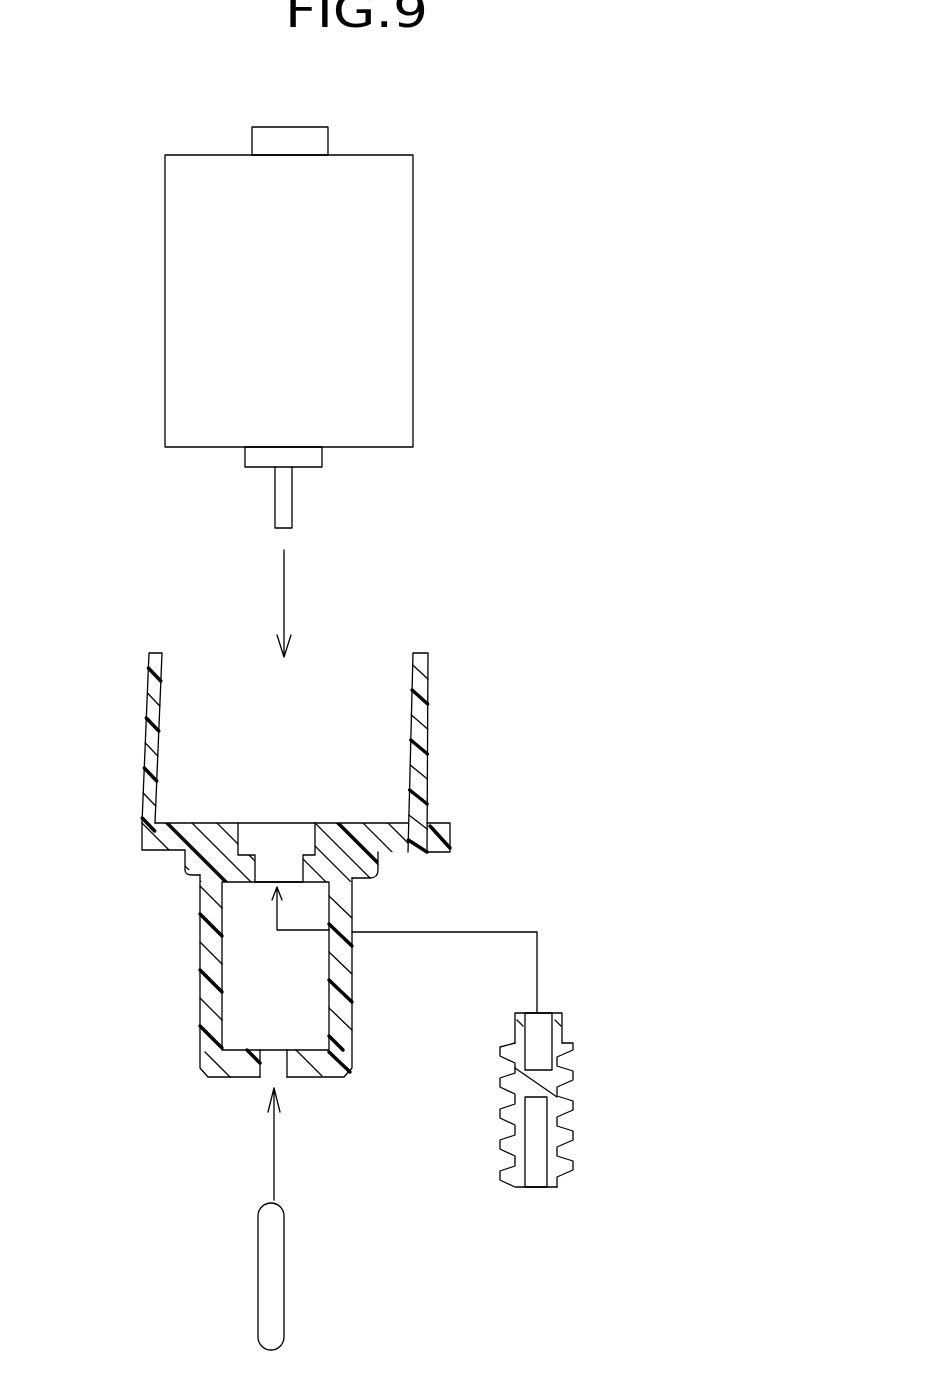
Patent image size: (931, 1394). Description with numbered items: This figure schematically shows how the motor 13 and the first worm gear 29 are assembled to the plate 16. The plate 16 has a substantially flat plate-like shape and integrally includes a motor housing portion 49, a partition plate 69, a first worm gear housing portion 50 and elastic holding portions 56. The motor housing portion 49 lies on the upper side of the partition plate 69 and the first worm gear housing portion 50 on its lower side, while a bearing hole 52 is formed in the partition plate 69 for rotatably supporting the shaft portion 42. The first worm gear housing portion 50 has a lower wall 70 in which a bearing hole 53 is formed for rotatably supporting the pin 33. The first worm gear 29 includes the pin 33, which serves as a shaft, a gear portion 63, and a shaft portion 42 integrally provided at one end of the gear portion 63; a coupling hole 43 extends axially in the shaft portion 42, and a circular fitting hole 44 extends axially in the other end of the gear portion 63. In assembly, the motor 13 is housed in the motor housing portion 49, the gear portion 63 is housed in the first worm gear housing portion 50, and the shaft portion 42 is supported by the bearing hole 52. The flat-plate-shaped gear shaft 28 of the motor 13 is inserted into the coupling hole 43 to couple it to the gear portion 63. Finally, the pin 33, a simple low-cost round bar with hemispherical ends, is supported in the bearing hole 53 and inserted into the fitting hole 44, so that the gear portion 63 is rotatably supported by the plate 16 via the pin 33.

The motor 13 is at (413, 273).
The gear shaft 28 is at (292, 507).
The motor housing portion 49 is at (427, 690).
The plate 16 is at (140, 840).
The elastic holding portions 56 is at (452, 832).
The bearing hole 52 is at (303, 875).
The first worm gear housing portion 50 is at (200, 978).
The partition plate 69 is at (247, 884).
The bearing hole 53 is at (268, 1080).
The lower wall 70 is at (300, 1080).
The pin 33 is at (258, 1283).
The shaft portion 42 is at (512, 1032).
The coupling hole 43 is at (548, 1030).
The gear portion 63 is at (573, 1118).
The first worm gear 29 is at (285, 1253).
The fitting hole 44 is at (528, 1173).